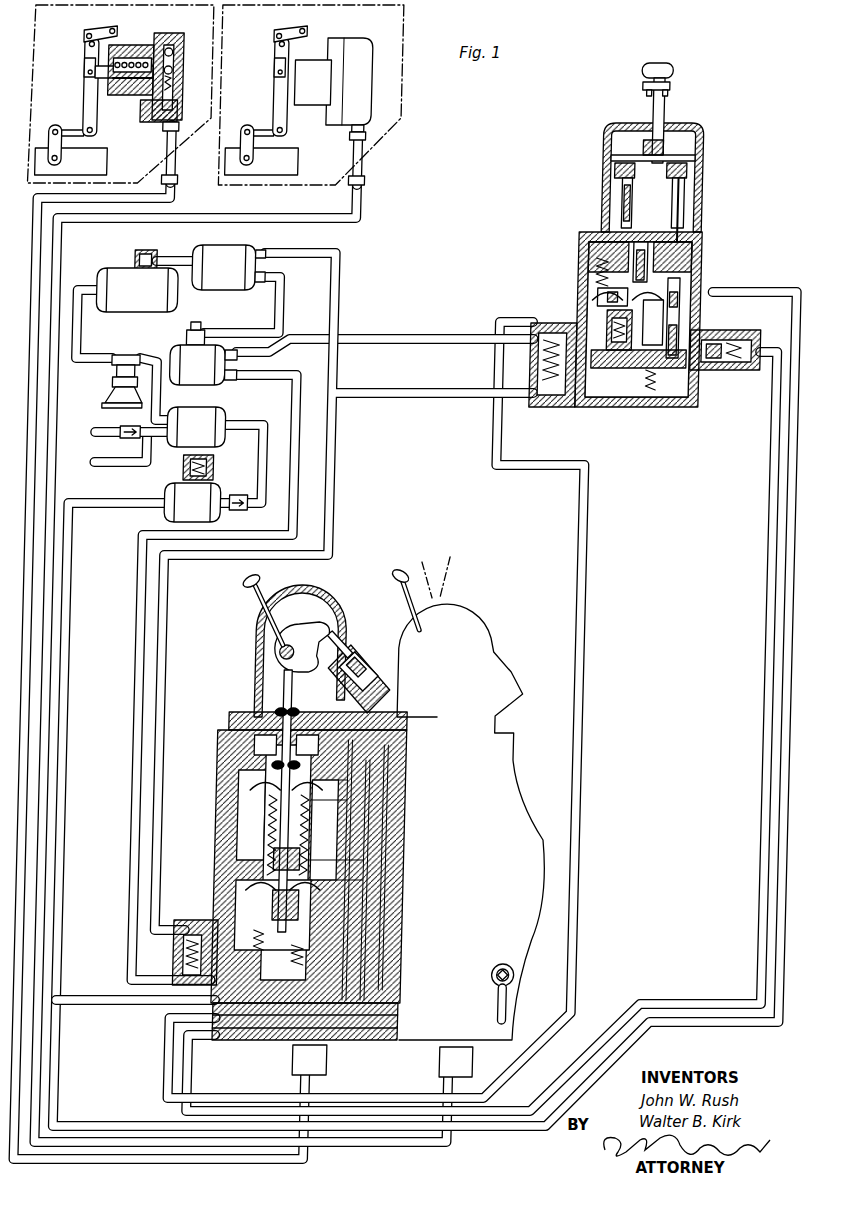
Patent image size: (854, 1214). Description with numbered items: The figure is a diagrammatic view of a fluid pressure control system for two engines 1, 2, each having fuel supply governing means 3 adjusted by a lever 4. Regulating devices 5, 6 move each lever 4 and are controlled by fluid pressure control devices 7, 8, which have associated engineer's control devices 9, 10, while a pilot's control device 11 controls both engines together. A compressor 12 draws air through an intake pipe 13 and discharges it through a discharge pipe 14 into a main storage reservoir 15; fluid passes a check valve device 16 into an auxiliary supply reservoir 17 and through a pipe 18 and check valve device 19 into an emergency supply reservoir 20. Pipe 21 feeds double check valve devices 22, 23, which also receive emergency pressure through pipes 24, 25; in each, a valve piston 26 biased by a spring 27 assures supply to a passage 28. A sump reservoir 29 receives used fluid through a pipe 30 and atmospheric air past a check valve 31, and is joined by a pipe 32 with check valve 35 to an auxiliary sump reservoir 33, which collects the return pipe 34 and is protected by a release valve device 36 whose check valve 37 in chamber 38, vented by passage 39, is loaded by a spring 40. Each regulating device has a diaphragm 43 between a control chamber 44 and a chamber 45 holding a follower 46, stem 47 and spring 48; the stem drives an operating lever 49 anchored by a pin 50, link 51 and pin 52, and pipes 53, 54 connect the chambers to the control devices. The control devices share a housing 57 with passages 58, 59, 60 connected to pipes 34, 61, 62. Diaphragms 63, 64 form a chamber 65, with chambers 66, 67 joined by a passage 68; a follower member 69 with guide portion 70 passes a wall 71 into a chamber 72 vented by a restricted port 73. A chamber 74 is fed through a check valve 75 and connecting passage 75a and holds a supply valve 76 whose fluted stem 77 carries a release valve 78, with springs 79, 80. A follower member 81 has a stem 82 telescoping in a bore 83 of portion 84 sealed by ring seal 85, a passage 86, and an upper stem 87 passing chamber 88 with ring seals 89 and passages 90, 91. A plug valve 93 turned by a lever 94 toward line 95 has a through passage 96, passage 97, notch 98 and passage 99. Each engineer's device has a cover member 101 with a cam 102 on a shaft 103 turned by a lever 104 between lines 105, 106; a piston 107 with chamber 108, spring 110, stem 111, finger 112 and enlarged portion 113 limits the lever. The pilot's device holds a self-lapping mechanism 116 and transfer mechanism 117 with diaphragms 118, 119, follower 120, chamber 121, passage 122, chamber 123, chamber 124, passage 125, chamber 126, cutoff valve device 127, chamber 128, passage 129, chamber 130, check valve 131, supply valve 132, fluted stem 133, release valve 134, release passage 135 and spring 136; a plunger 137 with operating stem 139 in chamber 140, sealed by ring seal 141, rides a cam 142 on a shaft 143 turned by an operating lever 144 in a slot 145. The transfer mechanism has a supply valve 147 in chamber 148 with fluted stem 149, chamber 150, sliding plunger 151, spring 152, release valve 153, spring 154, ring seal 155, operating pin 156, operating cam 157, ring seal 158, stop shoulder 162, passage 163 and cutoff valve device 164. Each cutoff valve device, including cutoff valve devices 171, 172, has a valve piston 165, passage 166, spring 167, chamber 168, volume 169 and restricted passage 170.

The engine 1 is at (166, 152).
The engine 2 is at (364, 152).
The fuel supply governing means 3 is at (37, 150).
The lever 4 is at (60, 128).
The regulating device 5 is at (150, 40).
The regulating device 6 is at (337, 40).
The fluid pressure control device 7 is at (187, 830).
The fluid pressure control device 8 is at (522, 763).
The engineer's control device 9 is at (257, 666).
The engineer's control device 10 is at (490, 668).
The pilot's control device 11 is at (592, 130).
The fluid compressor 12 is at (108, 386).
The intake pipe 13 is at (147, 350).
The discharge pipe 14 is at (71, 332).
The main storage reservoir 15 is at (132, 314).
The check valve device 16 is at (147, 256).
The auxiliary supply reservoir 17 is at (238, 253).
The pipe 18 is at (271, 322).
The check valve device 19 is at (190, 329).
The emergency supply reservoir 20 is at (186, 384).
The pipe 21 is at (374, 396).
The double check valve device 22 is at (524, 382).
The double check valve device 23 is at (192, 947).
The pipe 24 is at (374, 341).
The pipe 25 is at (296, 478).
The valve piston 26 is at (524, 362).
The spring 27 is at (530, 404).
The supply passage 28 is at (562, 404).
The sump reservoir 29 is at (165, 448).
The pipe 30 is at (94, 467).
The check valve 31 is at (112, 429).
The pipe 32 is at (262, 475).
The auxiliary sump reservoir 33 is at (165, 506).
The return pipe 34 is at (66, 568).
The check valve 35 is at (238, 512).
The pressure release valve device 36 is at (180, 470).
The check valve 37 is at (211, 476).
The chamber 38 is at (211, 466).
The passage 39 is at (188, 456).
The spring 40 is at (196, 456).
The flexible diaphragm 43 is at (158, 53).
The fluid pressure control chamber 44 is at (155, 129).
The chamber 45 is at (137, 113).
The diaphragm follower 46 is at (160, 78).
The stem 47 is at (71, 72).
The spring 48 is at (118, 48).
The operating lever 49 is at (71, 92).
The pin 50 is at (70, 37).
The link 51 is at (92, 33).
The pin 52 is at (97, 35).
The pipe 53 is at (32, 751).
The pipe 54 is at (50, 786).
The housing 57 is at (522, 812).
The passage 58 is at (246, 1009).
The passage 59 is at (267, 1013).
The passage 60 is at (290, 1013).
The pipe 61 is at (493, 321).
The pipe 62 is at (768, 538).
The flexible diaphragm 63 is at (283, 792).
The flexible diaphragm 64 is at (262, 868).
The chamber 65 is at (260, 832).
The chamber 66 is at (255, 782).
The chamber 67 is at (255, 892).
The passage 68 is at (396, 804).
The follower member 69 is at (381, 896).
The cylindrical guide portion 70 is at (373, 931).
The wall 71 is at (444, 904).
The chamber 72 is at (445, 938).
The restricted port 73 is at (221, 918).
The chamber 74 is at (351, 988).
The check valve 75 is at (250, 985).
The connecting passage 75a is at (436, 962).
The fluid pressure supply valve 76 is at (359, 963).
The fluted stem 77 is at (368, 948).
The release valve 78 is at (348, 915).
The bias spring 79 is at (300, 985).
The bias spring 80 is at (270, 988).
The follower member 81 is at (401, 788).
The stem 82 is at (391, 823).
The bore 83 is at (376, 858).
The upwardly extending portion 84 is at (268, 853).
The ring seal 85 is at (386, 843).
The passage 86 is at (396, 878).
The stem 87 is at (286, 700).
The chamber 88 is at (272, 742).
The ring seal 89 is at (276, 714).
The passage 90 is at (401, 768).
The passage 91 is at (274, 817).
The plug valve 93 is at (362, 1007).
The lever 94 is at (507, 1010).
The dot and dash line 95 is at (523, 982).
The through passage 96 is at (392, 1003).
The passage 97 is at (444, 921).
The notch 98 is at (351, 1003).
The passage 99 is at (396, 748).
The cover member 101 is at (259, 686).
The cam 102 is at (276, 640).
The shaft 103 is at (281, 655).
The engineer's control lever 104 is at (249, 584).
The dot and dash line 105 is at (320, 607).
The line 106 is at (292, 606).
The piston 107 is at (364, 682).
The pressure chamber 108 is at (383, 693).
The spring 110 is at (356, 662).
The stem 111 is at (334, 639).
The finger 112 is at (312, 623).
The enlarged portion 113 is at (352, 650).
The self-lapping fluid pressure supply and release valve mechanism 116 is at (592, 216).
The control transfer mechanism 117 is at (694, 186).
The flexible diaphragm 118 is at (528, 296).
The flexible diaphragm 119 is at (575, 305).
The diaphragm follower 120 is at (584, 270).
The chamber 121 is at (580, 291).
The passage 122 is at (690, 255).
The chamber 123 is at (765, 240).
The chamber 124 is at (580, 265).
The passage 125 is at (584, 275).
The chamber 126 is at (580, 320).
The cutoff valve device 127 is at (524, 302).
The chamber 128 is at (618, 404).
The passage 129 is at (560, 410).
The chamber 130 is at (596, 410).
The check valve 131 is at (586, 406).
The fluid pressure supply valve 132 is at (640, 390).
The fluted stem 133 is at (648, 365).
The fluid pressure release valve 134 is at (654, 345).
The release passage 135 is at (649, 325).
The spring 136 is at (588, 365).
The plunger 137 is at (690, 232).
The operating stem 139 is at (610, 190).
The chamber 140 is at (593, 136).
The ring seal 141 is at (571, 232).
The cam 142 is at (603, 168).
The shaft 143 is at (598, 157).
The operating lever 144 is at (636, 68).
The slot 145 is at (640, 125).
The fluid pressure supply valve 147 is at (690, 404).
The chamber 148 is at (660, 404).
The fluted stem 149 is at (643, 410).
The chamber 150 is at (719, 405).
The sliding plunger 151 is at (688, 289).
The spring 152 is at (672, 410).
The fluid pressure release valve 153 is at (690, 270).
The spring 154 is at (690, 306).
The ring seal 155 is at (760, 278).
The operating pin 156 is at (686, 206).
The operating cam 157 is at (676, 182).
The ring seal 158 is at (761, 218).
The stop shoulder 162 is at (765, 258).
The passage 163 is at (750, 295).
The cutoff valve device 164 is at (749, 372).
The valve piston 165 is at (747, 405).
The passage 166 is at (736, 332).
The spring 167 is at (735, 368).
The chamber 168 is at (738, 345).
The volume 169 is at (705, 368).
The restricted passage 170 is at (780, 295).
The cutoff valve device 171 is at (304, 1061).
The cutoff valve device 172 is at (451, 1061).